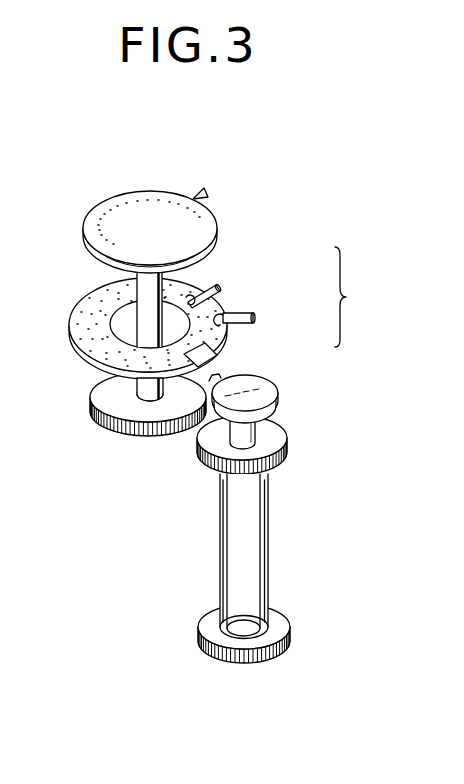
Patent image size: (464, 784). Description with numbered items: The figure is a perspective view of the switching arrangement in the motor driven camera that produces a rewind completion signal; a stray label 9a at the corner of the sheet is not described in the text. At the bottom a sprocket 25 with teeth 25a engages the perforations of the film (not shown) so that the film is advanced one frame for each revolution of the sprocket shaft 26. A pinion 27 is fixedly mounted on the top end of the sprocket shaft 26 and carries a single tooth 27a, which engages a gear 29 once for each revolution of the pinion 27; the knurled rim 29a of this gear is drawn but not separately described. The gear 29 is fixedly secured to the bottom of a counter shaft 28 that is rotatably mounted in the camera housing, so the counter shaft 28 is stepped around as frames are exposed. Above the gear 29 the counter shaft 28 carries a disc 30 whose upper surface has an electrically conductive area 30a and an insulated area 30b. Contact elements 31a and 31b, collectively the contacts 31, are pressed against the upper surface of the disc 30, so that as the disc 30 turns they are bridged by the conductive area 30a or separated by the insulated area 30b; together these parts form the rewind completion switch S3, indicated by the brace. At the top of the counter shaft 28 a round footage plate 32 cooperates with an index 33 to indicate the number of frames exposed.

The page marker 9a is at (14, 29).
The sprocket 25 is at (252, 542).
The teeth 25a is at (283, 464).
The sprocket shaft 26 is at (248, 432).
The pinion 27 is at (262, 397).
The tooth 27a is at (217, 376).
The counter shaft 28 is at (147, 383).
The gear 29 is at (140, 415).
The knurled rim 29a is at (165, 437).
The disc 30 is at (90, 361).
The electrically conductive area 30a is at (82, 313).
The insulated area 30b is at (230, 341).
The pins 31 is at (238, 300).
The contact element 31a is at (220, 283).
The contact element 31b is at (257, 312).
The round footage plate 32 is at (152, 192).
The index 33 is at (206, 191).
The rewind completion switch S3 is at (352, 297).